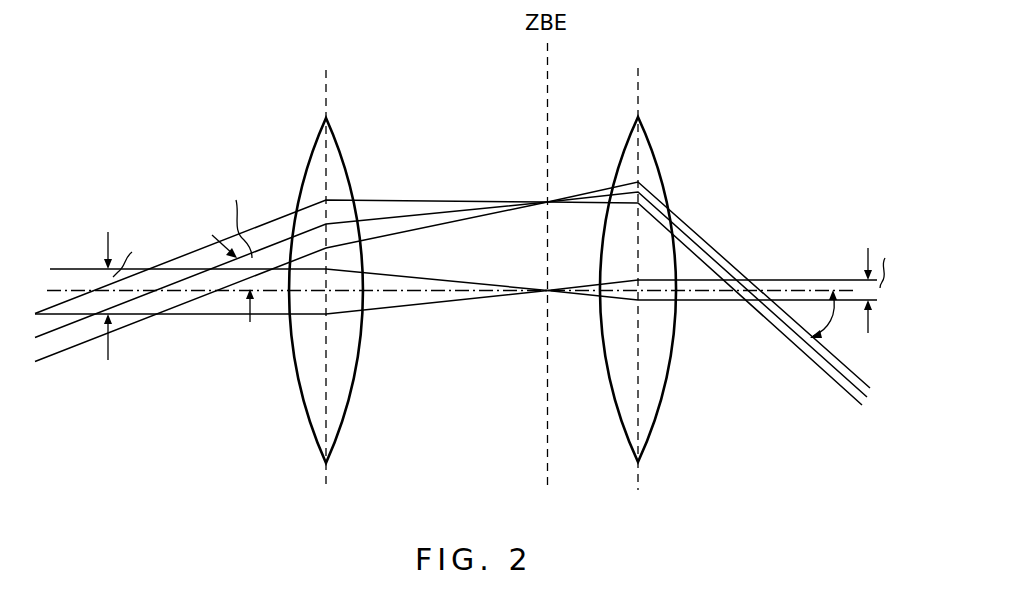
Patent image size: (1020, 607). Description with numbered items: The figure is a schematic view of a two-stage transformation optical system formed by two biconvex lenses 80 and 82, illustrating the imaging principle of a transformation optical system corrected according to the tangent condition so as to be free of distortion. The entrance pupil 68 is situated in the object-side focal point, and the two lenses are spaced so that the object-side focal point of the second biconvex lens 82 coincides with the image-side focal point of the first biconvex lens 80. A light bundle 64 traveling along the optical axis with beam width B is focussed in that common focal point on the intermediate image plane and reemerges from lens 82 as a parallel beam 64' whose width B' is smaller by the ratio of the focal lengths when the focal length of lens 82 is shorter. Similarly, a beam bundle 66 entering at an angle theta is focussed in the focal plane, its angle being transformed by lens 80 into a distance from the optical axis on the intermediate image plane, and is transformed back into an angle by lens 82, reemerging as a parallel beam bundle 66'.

The light bundle 64 is at (291, 285).
The beam bundle 66 is at (291, 250).
The entrance pupil 68 is at (157, 291).
The first biconvex lens 80 is at (340, 167).
The second biconvex lens 82 is at (648, 153).
The emergent light bundle 64' is at (723, 265).
The parallel beam bundle 66' is at (709, 289).